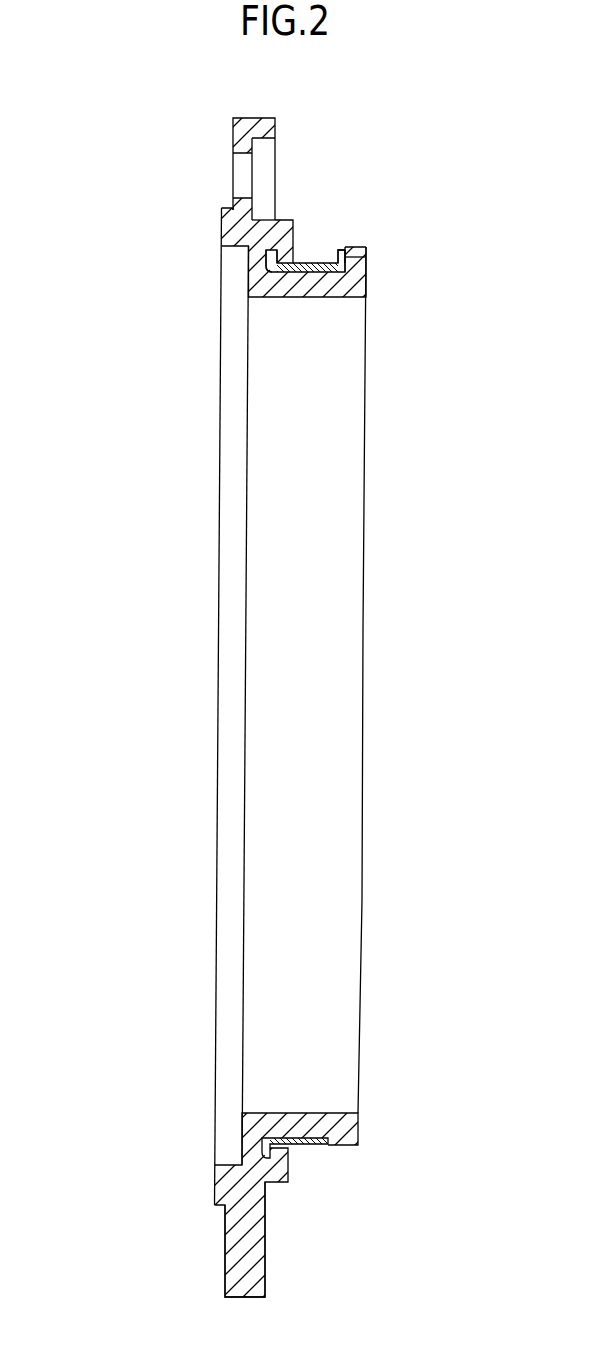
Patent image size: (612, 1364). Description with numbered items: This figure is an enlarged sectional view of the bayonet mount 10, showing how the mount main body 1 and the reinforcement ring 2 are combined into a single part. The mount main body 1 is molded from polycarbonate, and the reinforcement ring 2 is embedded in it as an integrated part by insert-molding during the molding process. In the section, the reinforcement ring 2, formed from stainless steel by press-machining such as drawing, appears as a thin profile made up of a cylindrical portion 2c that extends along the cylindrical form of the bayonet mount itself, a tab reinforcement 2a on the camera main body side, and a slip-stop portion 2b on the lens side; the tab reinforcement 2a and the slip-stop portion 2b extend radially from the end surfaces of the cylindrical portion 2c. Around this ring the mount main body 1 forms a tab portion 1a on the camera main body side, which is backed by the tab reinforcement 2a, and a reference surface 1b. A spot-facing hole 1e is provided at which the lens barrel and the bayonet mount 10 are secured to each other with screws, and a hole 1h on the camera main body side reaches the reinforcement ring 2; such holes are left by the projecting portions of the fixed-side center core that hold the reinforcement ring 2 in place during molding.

The bayonet mount 10 is at (148, 191).
The mount main body 1 is at (333, 295).
The tab portion 1a is at (368, 243).
The reference surface 1b is at (265, 1233).
The spot-facing hole 1e is at (268, 172).
The hole 1h is at (368, 261).
The reinforcement ring 2 is at (297, 272).
The tab reinforcement 2a is at (342, 252).
The slip-stop portion 2b is at (252, 272).
The cylindrical portion 2c is at (308, 262).